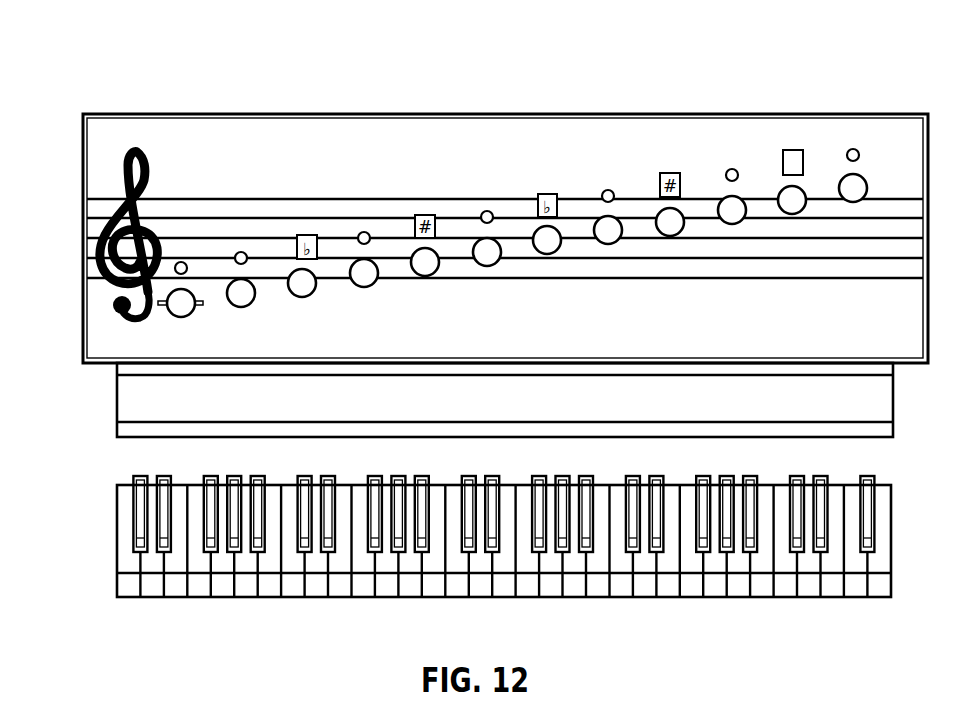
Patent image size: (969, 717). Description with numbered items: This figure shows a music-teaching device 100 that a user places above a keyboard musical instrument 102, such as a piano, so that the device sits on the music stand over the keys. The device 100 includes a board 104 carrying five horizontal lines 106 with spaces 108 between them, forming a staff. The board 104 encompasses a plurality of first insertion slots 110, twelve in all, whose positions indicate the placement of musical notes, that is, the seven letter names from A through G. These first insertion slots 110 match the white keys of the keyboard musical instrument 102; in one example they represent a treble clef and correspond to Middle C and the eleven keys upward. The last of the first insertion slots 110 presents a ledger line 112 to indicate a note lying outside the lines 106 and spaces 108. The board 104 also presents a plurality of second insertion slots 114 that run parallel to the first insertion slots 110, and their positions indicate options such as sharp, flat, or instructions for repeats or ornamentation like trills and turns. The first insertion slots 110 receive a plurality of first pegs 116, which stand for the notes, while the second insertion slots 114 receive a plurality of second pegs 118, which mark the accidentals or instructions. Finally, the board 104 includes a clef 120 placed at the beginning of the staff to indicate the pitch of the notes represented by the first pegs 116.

The device 100 is at (165, 56).
The keyboard musical instrument 102 is at (736, 567).
The board 104 is at (494, 150).
The horizontal lines 106 is at (382, 198).
The spaces 108 is at (307, 207).
The plurality of first insertion slots 110 is at (860, 177).
The ledger line 112 is at (200, 307).
The plurality of second insertion slots 114 is at (181, 262).
The plurality of first pegs 116 is at (670, 220).
The plurality of second pegs 118 is at (793, 150).
The clef 120 is at (110, 245).